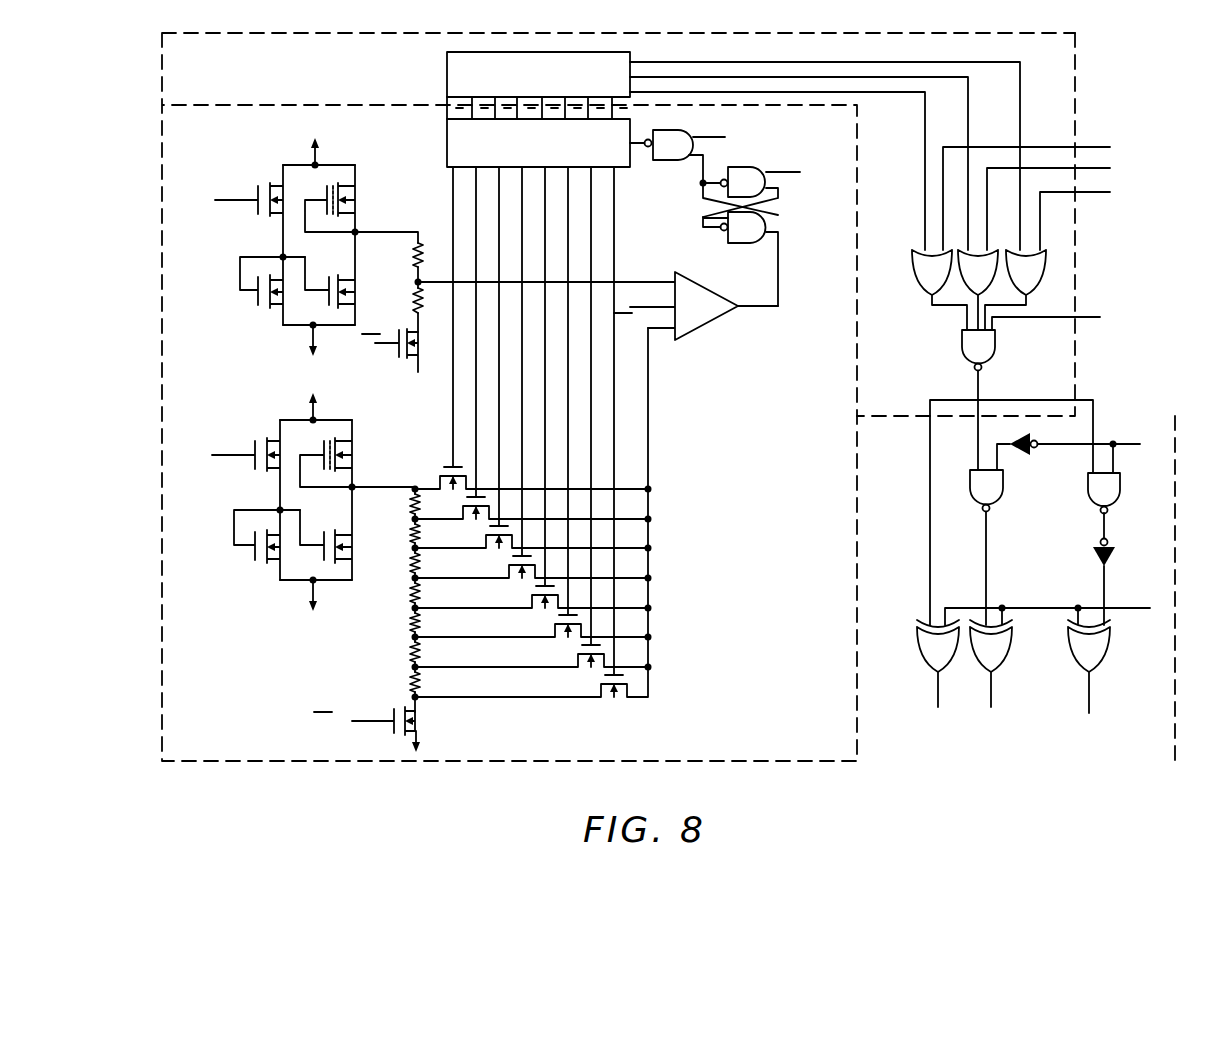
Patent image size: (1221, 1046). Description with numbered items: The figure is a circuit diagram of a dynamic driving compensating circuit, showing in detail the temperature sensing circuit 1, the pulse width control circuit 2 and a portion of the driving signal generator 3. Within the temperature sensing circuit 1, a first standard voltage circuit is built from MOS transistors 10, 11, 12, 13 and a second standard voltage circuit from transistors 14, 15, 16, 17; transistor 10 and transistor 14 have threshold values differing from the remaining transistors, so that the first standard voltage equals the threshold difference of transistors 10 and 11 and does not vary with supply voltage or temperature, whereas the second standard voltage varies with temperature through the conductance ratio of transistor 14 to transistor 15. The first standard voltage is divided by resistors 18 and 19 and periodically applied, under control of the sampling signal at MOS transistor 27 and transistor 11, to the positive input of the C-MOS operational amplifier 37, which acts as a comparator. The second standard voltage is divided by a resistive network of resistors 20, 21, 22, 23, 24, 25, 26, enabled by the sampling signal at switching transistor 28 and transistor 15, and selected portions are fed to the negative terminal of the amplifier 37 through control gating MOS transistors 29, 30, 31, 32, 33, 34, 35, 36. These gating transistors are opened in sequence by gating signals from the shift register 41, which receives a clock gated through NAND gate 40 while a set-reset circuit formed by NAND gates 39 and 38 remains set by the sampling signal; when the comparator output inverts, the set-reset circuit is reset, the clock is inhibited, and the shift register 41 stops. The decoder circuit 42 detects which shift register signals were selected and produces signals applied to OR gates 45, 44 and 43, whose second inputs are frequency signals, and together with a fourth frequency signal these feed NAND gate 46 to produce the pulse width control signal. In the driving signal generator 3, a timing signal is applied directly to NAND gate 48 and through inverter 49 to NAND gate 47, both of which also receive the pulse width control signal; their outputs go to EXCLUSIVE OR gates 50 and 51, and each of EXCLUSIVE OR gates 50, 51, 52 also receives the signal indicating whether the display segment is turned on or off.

The temperature sensing circuit 1 is at (770, 605).
The pulse width control circuit 2 is at (906, 382).
The driving signal generator 3 is at (896, 520).
The MOS transistor 10 is at (356, 197).
The MOS transistor 11 is at (285, 196).
The MOS transistor 12 is at (280, 295).
The MOS transistor 13 is at (345, 284).
The MOS transistor 14 is at (353, 446).
The MOS transistor 15 is at (282, 450).
The MOS transistor 16 is at (277, 550).
The MOS transistor 17 is at (356, 550).
The resistor 18 is at (416, 262).
The resistor 19 is at (416, 300).
The resistor 20 is at (410, 504).
The resistor 21 is at (410, 533).
The resistor 22 is at (410, 563).
The resistor 23 is at (410, 592).
The resistor 24 is at (410, 622).
The resistor 25 is at (410, 652).
The resistor 26 is at (410, 682).
The MOS transistor 27 is at (422, 348).
The switching transistor 28 is at (418, 726).
The control gating MOS transistor 29 is at (456, 491).
The control gating MOS transistor 30 is at (478, 521).
The control gating MOS transistor 31 is at (501, 550).
The control gating MOS transistor 32 is at (524, 580).
The control gating MOS transistor 33 is at (547, 610).
The control gating MOS transistor 34 is at (570, 639).
The control gating MOS transistor 35 is at (593, 669).
The control gating MOS transistor 36 is at (616, 699).
The C-MOS operational amplifier 37 is at (718, 320).
The NAND gate 38 is at (766, 243).
The NAND gate 39 is at (753, 175).
The NAND gate 40 is at (672, 152).
The shift register 41 is at (447, 150).
The decoder circuit 42 is at (447, 78).
The OR gate 43 is at (928, 275).
The OR gate 44 is at (976, 282).
The OR gate 45 is at (1030, 280).
The NAND gate 46 is at (990, 355).
The NAND gate 47 is at (1005, 490).
The NAND gate 48 is at (1118, 490).
The inverter 49 is at (1028, 452).
The EXCLUSIVE OR gate 50 is at (928, 662).
The EXCLUSIVE OR gate 51 is at (995, 658).
The EXCLUSIVE OR gate 52 is at (1100, 652).